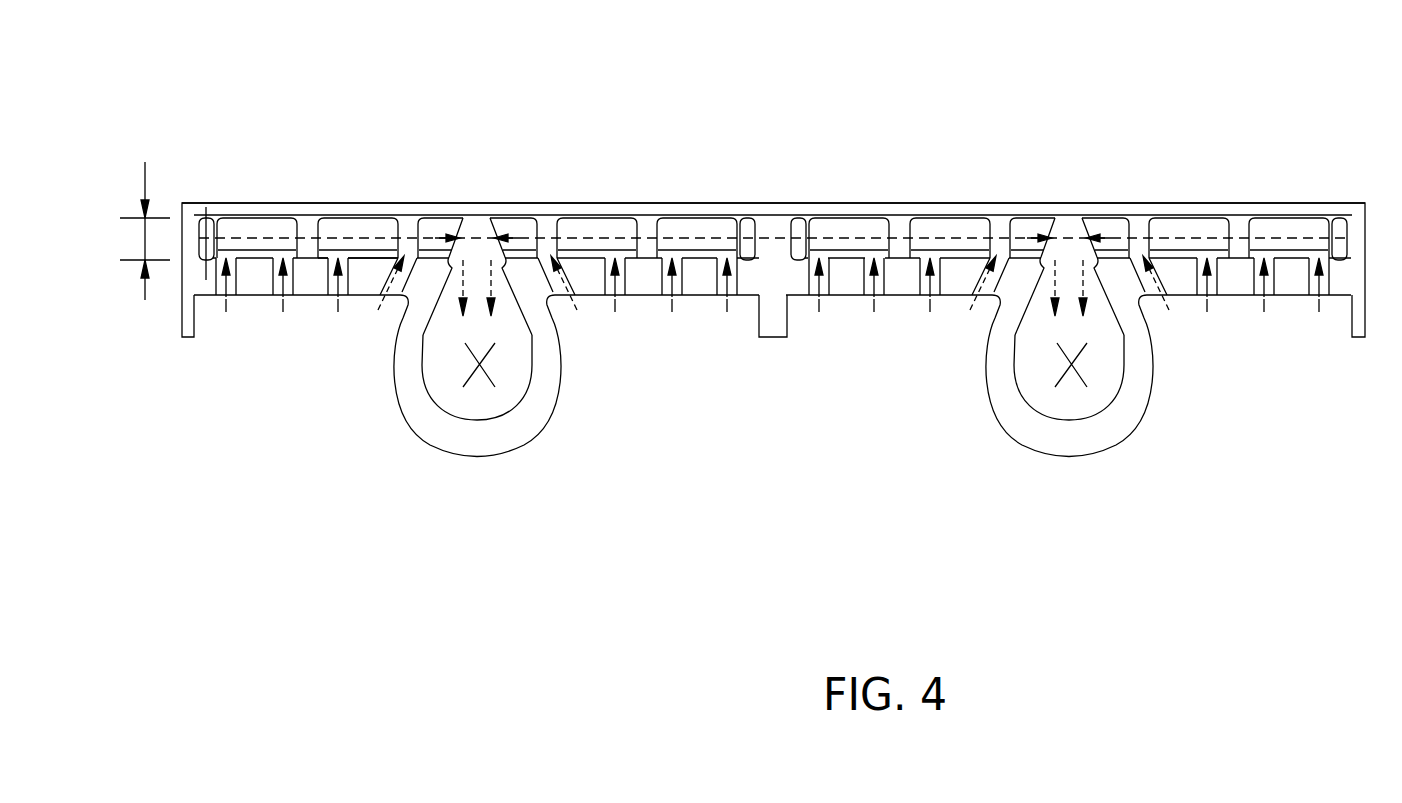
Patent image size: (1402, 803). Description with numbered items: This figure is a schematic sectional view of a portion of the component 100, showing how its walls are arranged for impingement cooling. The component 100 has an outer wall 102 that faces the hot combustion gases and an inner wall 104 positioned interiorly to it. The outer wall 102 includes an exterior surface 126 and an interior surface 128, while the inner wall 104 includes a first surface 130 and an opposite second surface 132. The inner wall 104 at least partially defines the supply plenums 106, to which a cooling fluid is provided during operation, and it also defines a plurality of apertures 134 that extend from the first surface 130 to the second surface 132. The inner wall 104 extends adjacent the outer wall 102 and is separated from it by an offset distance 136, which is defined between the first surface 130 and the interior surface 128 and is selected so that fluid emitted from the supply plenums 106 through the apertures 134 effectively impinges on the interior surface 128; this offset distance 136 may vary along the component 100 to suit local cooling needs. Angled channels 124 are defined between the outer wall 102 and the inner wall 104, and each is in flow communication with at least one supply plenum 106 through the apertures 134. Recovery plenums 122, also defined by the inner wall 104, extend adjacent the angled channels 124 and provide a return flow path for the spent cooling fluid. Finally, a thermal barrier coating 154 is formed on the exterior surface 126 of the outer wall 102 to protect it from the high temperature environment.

The component 100 is at (1147, 112).
The outer wall 102 is at (722, 204).
The inner wall 104 is at (693, 278).
The supply plenum 106 is at (1068, 329).
The recovery plenum 122 is at (480, 397).
The angled channel 124 is at (1190, 237).
The exterior surface 126 is at (550, 212).
The interior surface 128 is at (350, 220).
The first surface 130 is at (362, 257).
The second surface 132 is at (305, 297).
The apertures 134 is at (820, 303).
The offset distance 136 is at (145, 240).
The coating 154 is at (476, 204).